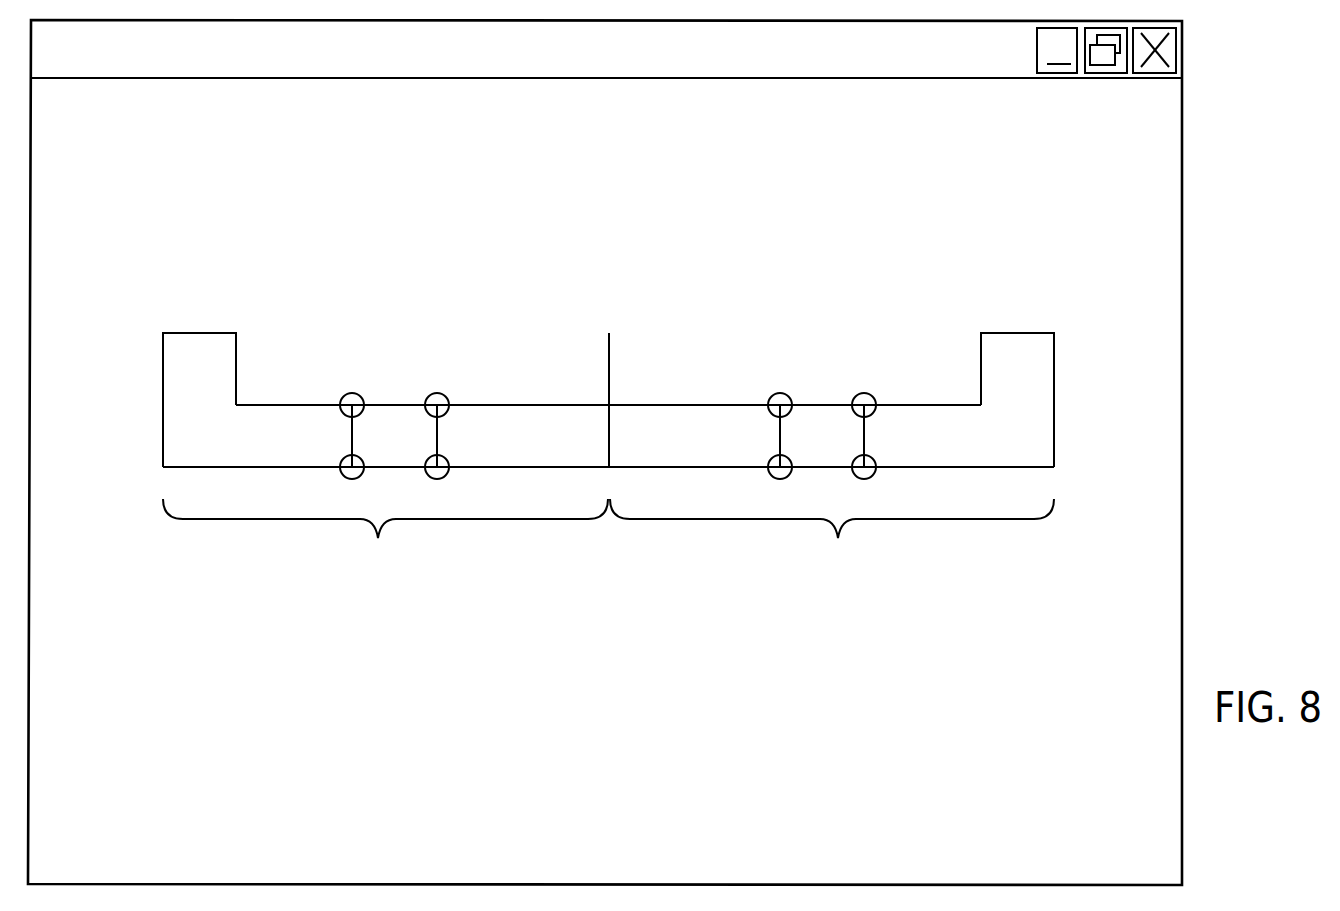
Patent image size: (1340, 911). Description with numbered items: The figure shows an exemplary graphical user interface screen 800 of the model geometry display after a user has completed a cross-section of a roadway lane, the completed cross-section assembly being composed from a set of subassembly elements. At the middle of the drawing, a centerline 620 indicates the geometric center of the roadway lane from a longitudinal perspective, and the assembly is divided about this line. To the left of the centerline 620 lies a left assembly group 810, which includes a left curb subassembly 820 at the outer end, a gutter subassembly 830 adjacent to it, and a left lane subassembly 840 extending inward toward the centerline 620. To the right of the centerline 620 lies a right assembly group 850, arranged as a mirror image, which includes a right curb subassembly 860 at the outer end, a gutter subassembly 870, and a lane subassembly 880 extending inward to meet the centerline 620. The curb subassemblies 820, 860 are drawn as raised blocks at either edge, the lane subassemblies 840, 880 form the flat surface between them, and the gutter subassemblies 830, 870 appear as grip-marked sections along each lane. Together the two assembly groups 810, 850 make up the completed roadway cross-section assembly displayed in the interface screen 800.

The CIVIL 3D application window 800 is at (1182, 124).
The left assembly group 810 is at (385, 538).
The right assembly group 850 is at (832, 538).
The left curb subassembly 820 is at (205, 333).
The right curb subassembly 860 is at (1021, 333).
The gutter subassembly 830 is at (393, 405).
The gutter subassembly 870 is at (818, 405).
The left lane subassembly 840 is at (527, 405).
The lane subassembly 880 is at (710, 405).
The centerline 620 is at (607, 345).